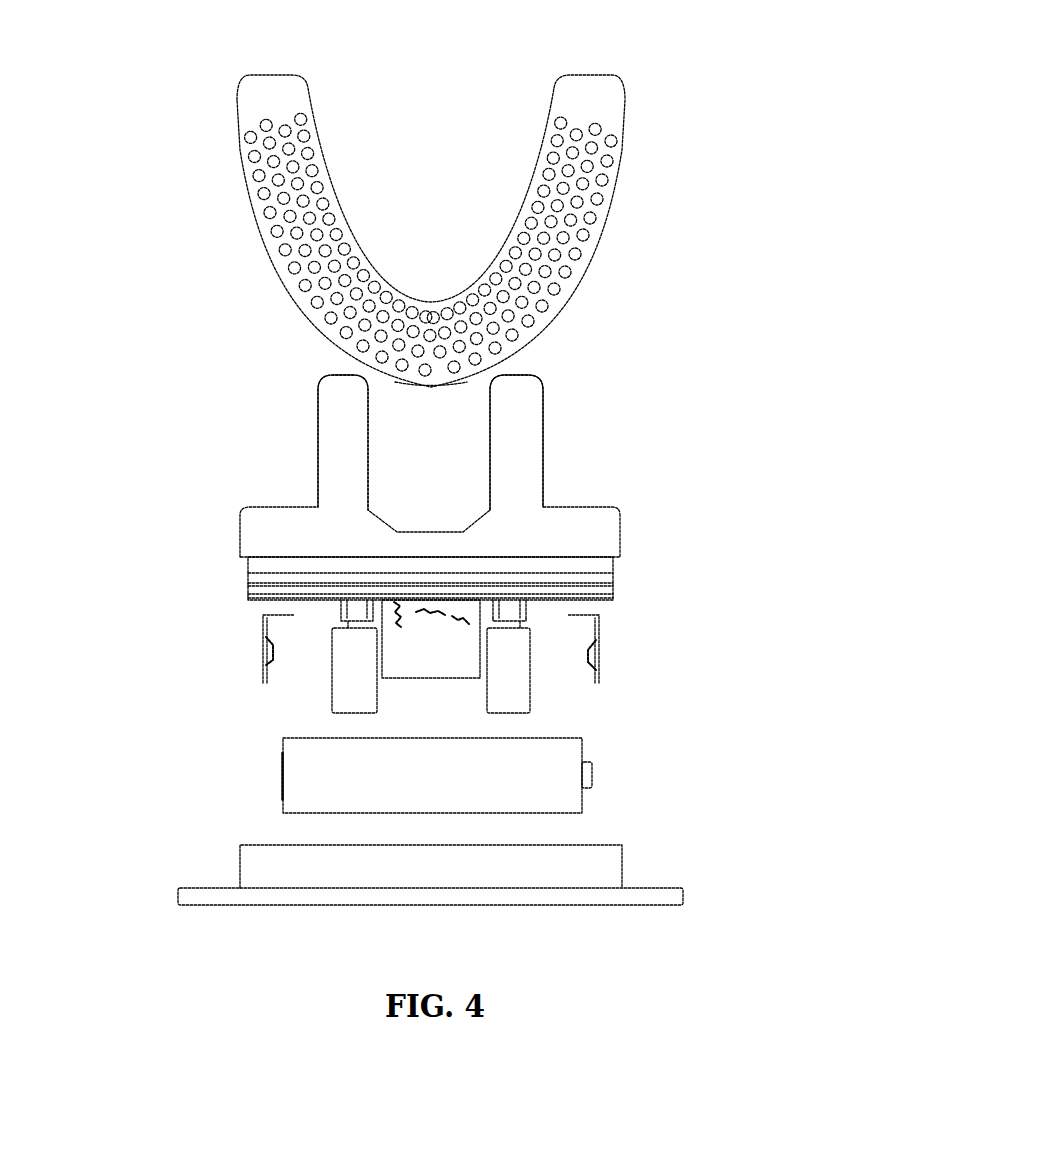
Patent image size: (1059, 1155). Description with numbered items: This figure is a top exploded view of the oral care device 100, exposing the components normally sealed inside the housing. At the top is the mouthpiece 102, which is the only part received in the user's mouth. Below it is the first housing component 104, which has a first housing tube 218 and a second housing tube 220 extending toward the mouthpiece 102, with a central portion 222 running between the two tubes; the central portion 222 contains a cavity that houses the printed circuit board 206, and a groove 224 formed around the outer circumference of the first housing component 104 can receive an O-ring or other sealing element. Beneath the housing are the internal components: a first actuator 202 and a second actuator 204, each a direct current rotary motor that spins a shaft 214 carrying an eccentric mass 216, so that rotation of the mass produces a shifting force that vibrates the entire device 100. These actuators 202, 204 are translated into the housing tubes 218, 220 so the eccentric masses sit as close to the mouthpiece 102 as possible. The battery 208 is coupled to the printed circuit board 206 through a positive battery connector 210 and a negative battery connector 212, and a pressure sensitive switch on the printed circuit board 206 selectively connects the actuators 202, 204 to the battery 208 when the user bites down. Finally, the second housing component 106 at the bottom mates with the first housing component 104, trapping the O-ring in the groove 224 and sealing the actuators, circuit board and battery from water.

The oral care device 100 is at (806, 142).
The mouthpiece 102 is at (162, 254).
The first housing component 104 is at (670, 415).
The second housing component 106 is at (737, 857).
The first actuator 202 is at (510, 678).
The second actuator 204 is at (348, 690).
The printed circuit board 206 is at (429, 665).
The battery 208 is at (567, 770).
The positive battery connector 210 is at (600, 636).
The negative battery connector 212 is at (267, 658).
The shaft 214 is at (505, 625).
The eccentric mass 216 is at (512, 608).
The first housing tube 218 is at (532, 473).
The second housing tube 220 is at (333, 408).
The central portion 222 is at (435, 393).
The groove 224 is at (256, 578).